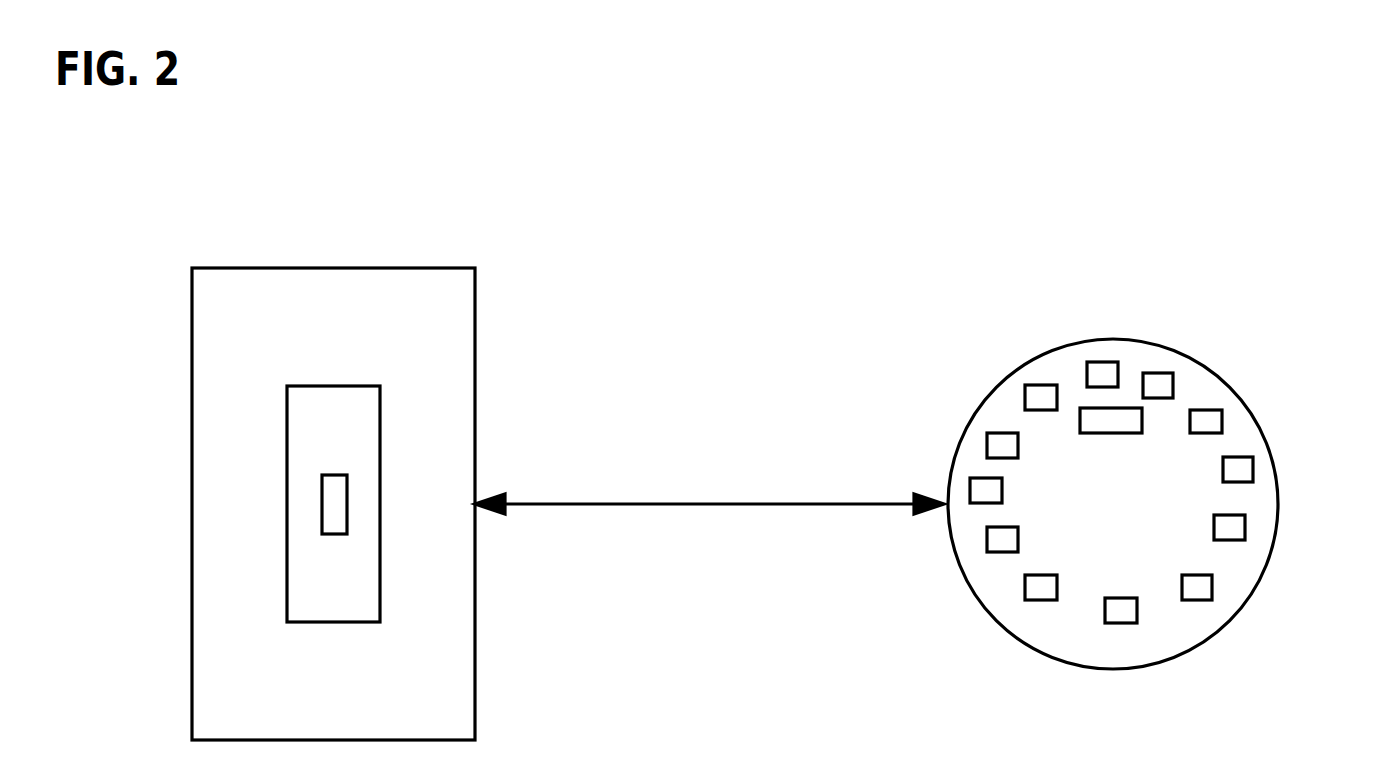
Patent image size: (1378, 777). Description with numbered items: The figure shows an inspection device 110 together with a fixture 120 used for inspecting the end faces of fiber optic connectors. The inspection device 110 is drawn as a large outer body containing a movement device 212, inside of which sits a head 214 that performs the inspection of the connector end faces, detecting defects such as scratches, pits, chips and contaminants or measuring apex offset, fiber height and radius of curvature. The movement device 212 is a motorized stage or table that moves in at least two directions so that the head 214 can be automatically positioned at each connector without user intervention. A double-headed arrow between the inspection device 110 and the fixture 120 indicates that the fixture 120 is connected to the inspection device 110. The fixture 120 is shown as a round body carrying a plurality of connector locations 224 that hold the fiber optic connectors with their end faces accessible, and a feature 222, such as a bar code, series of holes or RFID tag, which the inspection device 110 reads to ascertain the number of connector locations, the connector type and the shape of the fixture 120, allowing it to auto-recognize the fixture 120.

The inspection device 110 is at (339, 268).
The movement device 212 is at (336, 386).
The head 214 is at (333, 503).
The fixture 120 is at (1113, 504).
The feature 222 is at (1113, 408).
The connector locations 224 is at (1240, 457).